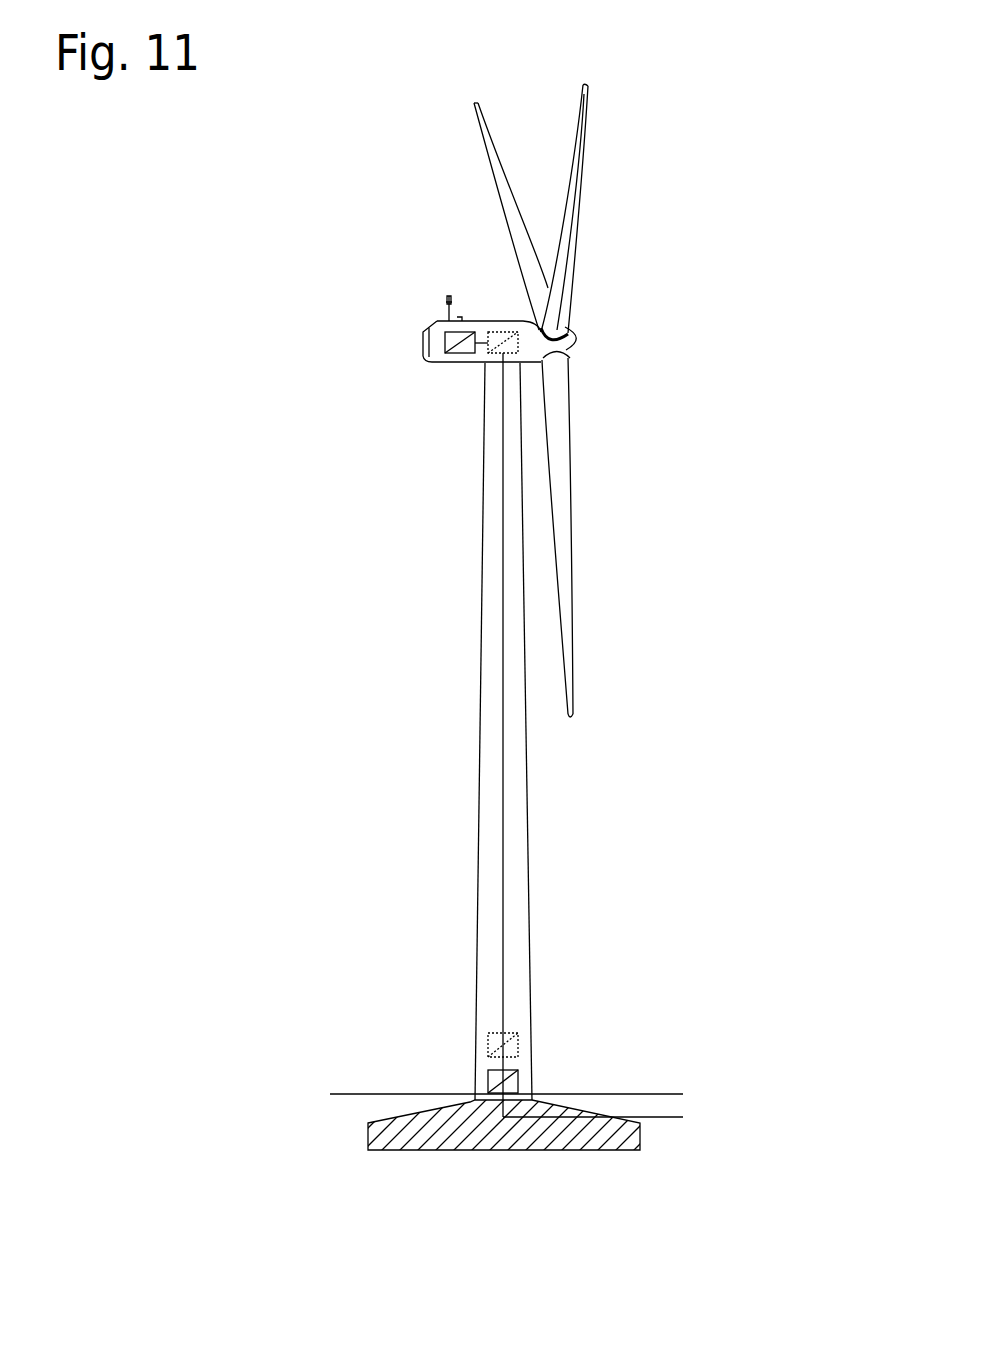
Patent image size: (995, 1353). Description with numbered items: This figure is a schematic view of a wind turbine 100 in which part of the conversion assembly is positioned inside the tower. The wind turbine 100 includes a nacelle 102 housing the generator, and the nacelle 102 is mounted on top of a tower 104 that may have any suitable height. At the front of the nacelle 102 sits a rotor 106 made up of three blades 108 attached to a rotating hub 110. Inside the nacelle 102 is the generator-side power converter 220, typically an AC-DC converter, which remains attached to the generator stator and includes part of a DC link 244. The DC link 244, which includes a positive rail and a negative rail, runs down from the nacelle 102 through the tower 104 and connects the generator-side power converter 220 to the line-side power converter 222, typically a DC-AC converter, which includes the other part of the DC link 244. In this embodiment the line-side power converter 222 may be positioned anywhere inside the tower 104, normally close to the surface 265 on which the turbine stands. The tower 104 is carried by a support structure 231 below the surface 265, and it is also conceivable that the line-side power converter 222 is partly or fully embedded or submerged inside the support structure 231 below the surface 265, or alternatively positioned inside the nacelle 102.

The wind turbine 100 is at (393, 272).
The nacelle 102 is at (432, 379).
The tower 104 is at (480, 633).
The rotor 106 is at (635, 292).
The blades 108 is at (493, 170).
The rotating hub 110 is at (571, 352).
The generator-side power converter 220 is at (445, 343).
The line-side power converter 222 is at (520, 1082).
The DC link 244 is at (503, 885).
The surface 265 is at (412, 1093).
The support structure 231 is at (498, 1152).